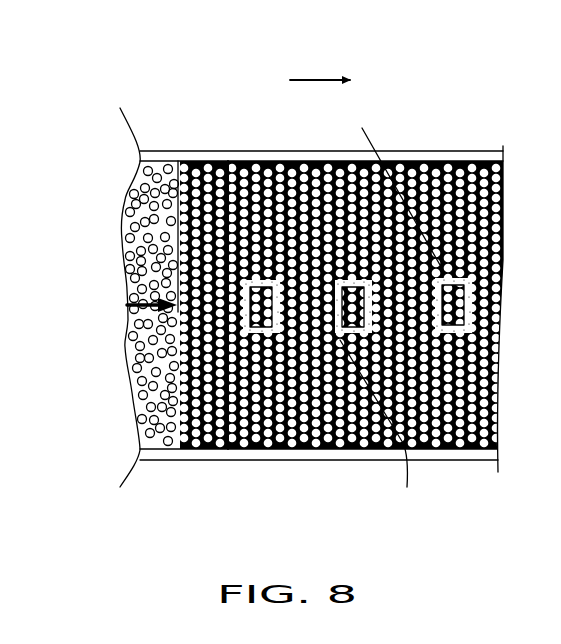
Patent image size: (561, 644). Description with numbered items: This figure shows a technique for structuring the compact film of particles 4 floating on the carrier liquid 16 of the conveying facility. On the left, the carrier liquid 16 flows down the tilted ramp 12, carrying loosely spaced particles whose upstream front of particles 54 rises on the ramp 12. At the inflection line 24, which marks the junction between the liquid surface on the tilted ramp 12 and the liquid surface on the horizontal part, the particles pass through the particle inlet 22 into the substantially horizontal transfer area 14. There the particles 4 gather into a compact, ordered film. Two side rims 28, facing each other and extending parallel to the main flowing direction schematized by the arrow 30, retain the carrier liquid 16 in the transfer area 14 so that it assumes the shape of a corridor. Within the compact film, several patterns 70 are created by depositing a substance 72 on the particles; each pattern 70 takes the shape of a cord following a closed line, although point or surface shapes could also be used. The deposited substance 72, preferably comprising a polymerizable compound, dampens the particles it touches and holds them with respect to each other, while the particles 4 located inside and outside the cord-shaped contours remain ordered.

The particles 4 is at (128, 203).
The tilted ramp 12 is at (155, 480).
The transfer area 14 is at (370, 468).
The carrier liquid 16 is at (322, 450).
The particle inlet 22 is at (233, 450).
The inflection line 24 is at (217, 161).
The side rims 28 is at (492, 151).
The arrow 30 is at (316, 80).
The upstream front of particles 54 is at (134, 391).
The patterns 70 is at (258, 276).
The deposited substance 72 is at (390, 307).